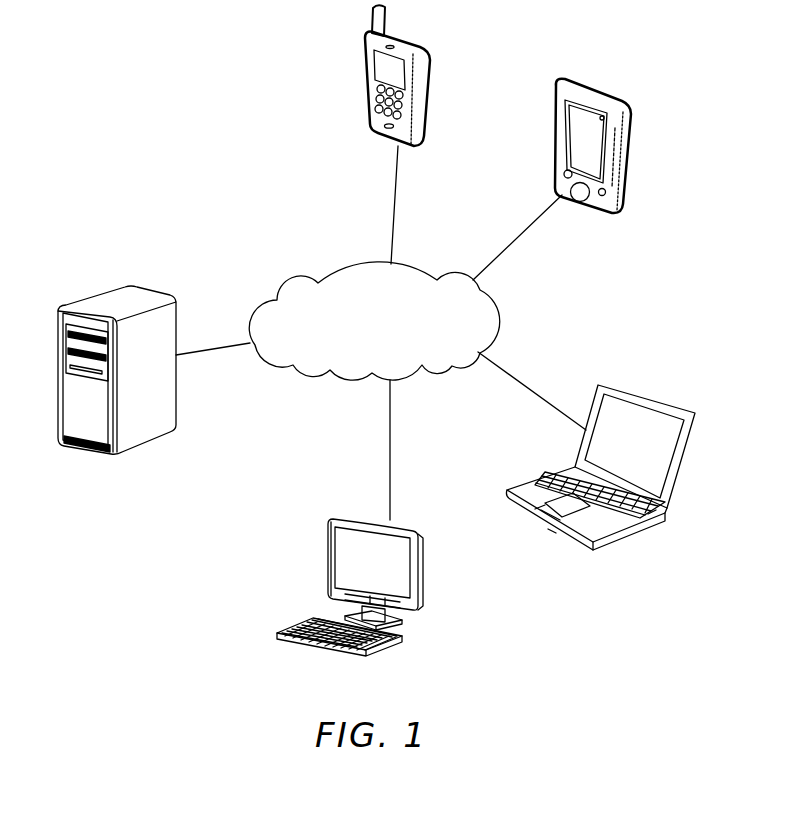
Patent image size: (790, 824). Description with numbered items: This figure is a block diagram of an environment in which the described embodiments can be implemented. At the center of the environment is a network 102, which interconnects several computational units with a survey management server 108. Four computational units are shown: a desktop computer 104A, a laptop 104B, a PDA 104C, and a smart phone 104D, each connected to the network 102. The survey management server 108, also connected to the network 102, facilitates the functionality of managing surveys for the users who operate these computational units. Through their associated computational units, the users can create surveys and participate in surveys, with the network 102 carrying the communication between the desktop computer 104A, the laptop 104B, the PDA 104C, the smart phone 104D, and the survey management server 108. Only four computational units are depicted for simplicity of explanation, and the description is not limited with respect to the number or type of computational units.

The network 102 is at (332, 266).
The desktop computer 104A is at (424, 585).
The laptop 104B is at (636, 394).
The PDA 104C is at (632, 159).
The smart phone 104D is at (363, 79).
The survey management server 108 is at (100, 292).